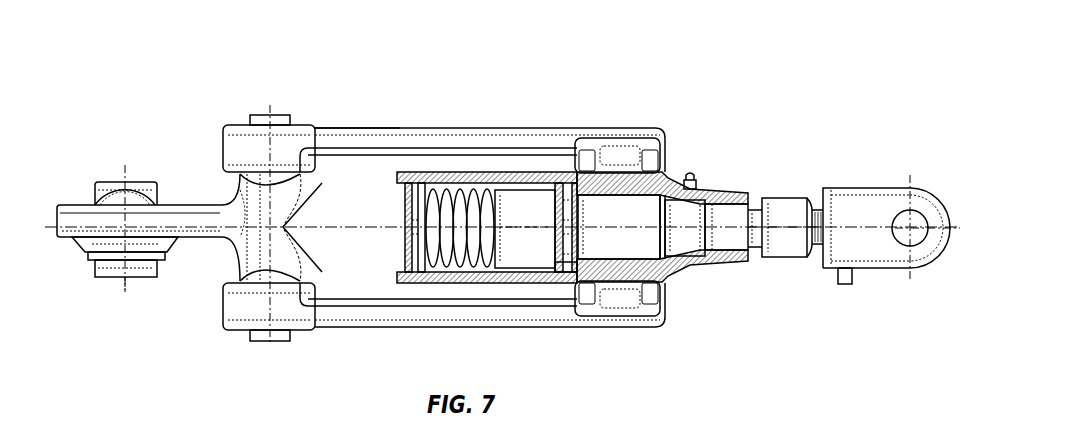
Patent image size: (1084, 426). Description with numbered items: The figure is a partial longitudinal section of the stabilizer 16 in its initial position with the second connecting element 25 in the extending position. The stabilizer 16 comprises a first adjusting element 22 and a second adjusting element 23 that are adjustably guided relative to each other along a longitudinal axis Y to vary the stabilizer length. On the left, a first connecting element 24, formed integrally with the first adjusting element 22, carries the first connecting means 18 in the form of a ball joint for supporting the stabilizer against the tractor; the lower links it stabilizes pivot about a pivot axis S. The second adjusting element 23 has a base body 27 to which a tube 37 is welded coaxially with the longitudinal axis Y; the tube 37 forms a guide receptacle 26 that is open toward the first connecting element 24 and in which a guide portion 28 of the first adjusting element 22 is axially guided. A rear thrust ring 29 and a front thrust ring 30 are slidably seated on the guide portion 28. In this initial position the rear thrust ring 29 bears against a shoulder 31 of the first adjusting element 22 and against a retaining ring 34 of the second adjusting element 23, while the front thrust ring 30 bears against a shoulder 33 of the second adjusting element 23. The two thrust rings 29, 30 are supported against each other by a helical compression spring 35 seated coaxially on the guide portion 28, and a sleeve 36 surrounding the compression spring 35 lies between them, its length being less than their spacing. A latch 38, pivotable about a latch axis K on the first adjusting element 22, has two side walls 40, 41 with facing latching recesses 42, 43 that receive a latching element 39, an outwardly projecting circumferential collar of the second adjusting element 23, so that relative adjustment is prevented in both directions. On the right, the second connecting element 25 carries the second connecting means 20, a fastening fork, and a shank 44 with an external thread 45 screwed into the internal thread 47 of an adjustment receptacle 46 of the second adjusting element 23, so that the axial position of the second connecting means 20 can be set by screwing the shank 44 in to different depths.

The stabilizer 16 is at (278, 78).
The first connecting means 18 is at (99, 190).
The second connecting means 20 is at (876, 207).
The first adjusting element 22 is at (368, 193).
The second adjusting element 23 is at (717, 168).
The first connecting element 24 is at (167, 166).
The second connecting element 25 is at (838, 145).
The guide receptacle 26 is at (500, 192).
The base body 27 is at (628, 215).
The guide portion 28 is at (453, 207).
The rear thrust ring 29 is at (417, 196).
The front thrust ring 30 is at (566, 192).
The shoulder 31 is at (421, 272).
The shoulder 33 is at (562, 270).
The retaining ring 34 is at (408, 262).
The compression spring 35 is at (465, 267).
The sleeve 36 is at (525, 262).
The tube 37 is at (538, 175).
The latch 38 is at (335, 130).
The latching element 39 is at (616, 160).
The side wall 40 is at (365, 130).
The side wall 41 is at (325, 320).
The latching recess 42 is at (619, 227).
The latching recess 43 is at (634, 299).
The shank 44 is at (777, 248).
The external thread 45 is at (739, 258).
The adjustment receptacle 46 is at (698, 257).
The internal thread 47 is at (733, 206).
The pivot axis S is at (124, 285).
The latch axis K is at (270, 302).
The longitudinal axis Y is at (778, 224).